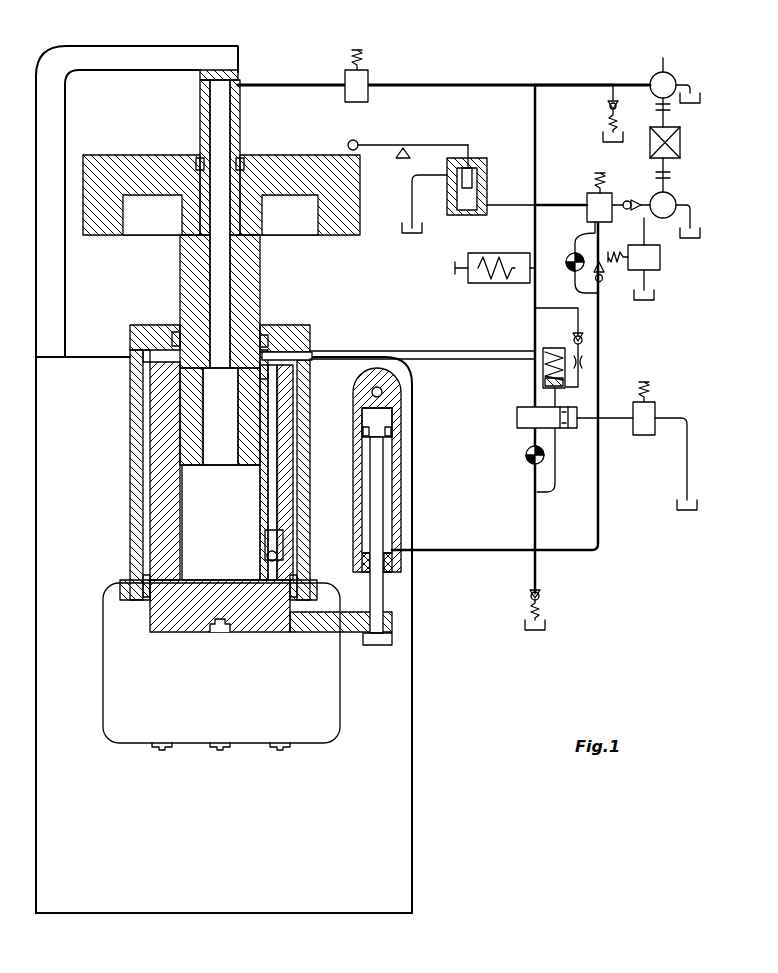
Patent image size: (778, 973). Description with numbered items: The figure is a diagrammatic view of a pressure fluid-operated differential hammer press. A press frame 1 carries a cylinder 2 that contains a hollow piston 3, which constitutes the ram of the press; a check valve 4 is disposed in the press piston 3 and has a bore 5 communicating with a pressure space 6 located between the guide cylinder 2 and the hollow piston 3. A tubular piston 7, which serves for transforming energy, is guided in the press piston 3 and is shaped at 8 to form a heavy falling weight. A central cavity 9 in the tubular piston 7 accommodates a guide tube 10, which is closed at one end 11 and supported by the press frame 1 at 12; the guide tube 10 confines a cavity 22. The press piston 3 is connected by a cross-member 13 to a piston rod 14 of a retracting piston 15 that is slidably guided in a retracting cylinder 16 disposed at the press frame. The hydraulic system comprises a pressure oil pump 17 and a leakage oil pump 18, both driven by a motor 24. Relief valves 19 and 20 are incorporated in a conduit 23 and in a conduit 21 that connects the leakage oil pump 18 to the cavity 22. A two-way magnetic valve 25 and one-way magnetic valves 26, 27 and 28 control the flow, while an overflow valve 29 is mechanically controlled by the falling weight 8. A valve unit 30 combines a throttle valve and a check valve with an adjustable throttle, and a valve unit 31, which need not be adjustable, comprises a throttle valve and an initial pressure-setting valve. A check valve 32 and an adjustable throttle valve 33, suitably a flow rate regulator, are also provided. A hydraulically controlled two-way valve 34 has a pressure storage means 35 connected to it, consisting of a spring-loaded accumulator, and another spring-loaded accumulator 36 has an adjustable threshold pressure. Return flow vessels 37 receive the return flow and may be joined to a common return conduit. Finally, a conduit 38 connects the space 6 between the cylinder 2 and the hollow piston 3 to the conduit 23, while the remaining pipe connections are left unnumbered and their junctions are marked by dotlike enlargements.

The press frame 1 is at (395, 731).
The cylinder 2 is at (304, 512).
The hollow piston 3 is at (263, 618).
The check valve 4 is at (264, 553).
The bore 5 is at (276, 448).
The pressure space 6 is at (283, 358).
The tubular piston 7 is at (185, 262).
The falling weight 8 is at (340, 232).
The central cavity 9 is at (224, 445).
The guide tube 10 is at (241, 132).
The closed end 11 is at (220, 70).
The support point 12 is at (120, 48).
The cross-member 13 is at (393, 622).
The piston rod 14 is at (376, 590).
The retracting piston 15 is at (385, 430).
The retracting cylinder 16 is at (396, 478).
The pressure oil pump 17 is at (676, 193).
The leakage oil pump 18 is at (670, 66).
The relief valve 19 is at (606, 108).
The relief valve 20 is at (545, 595).
The conduit 21 is at (505, 83).
The cavity 22 is at (218, 112).
The conduit 23 is at (533, 334).
The motor 24 is at (650, 145).
The two-way magnetic valve 25 is at (590, 198).
The one-way magnetic valve 26 is at (365, 76).
The one-way magnetic valve 27 is at (661, 262).
The one-way magnetic valve 28 is at (647, 436).
The overflow valve 29 is at (480, 172).
The valve unit 30 is at (572, 257).
The valve unit 31 is at (586, 360).
The check valve 32 is at (632, 192).
The adjustable throttle valve 33 is at (526, 457).
The hydraulically controlled two-way valve 34 is at (517, 416).
The pressure storage means 35 is at (543, 374).
The spring-loaded accumulator 36 is at (490, 254).
The return flow vessels 37 is at (412, 234).
The conduit 38 is at (430, 350).